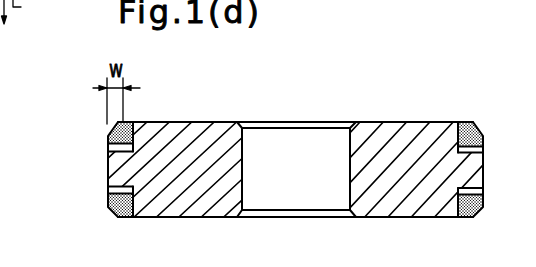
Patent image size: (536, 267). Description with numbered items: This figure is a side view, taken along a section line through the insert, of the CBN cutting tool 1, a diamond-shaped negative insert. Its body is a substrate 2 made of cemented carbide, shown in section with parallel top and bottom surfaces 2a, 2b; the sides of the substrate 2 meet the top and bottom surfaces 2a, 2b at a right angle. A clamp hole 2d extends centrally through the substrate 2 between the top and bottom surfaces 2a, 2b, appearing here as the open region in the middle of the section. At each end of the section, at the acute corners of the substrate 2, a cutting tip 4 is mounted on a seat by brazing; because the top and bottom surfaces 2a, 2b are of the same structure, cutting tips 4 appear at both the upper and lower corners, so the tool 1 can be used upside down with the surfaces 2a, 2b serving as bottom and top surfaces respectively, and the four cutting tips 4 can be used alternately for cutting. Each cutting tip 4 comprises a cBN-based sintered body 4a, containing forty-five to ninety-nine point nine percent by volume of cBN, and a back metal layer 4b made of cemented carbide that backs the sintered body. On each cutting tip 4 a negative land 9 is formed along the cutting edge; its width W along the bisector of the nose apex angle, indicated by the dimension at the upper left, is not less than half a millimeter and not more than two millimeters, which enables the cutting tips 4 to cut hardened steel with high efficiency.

The CBN cutting tool 1 is at (367, 112).
The substrate 2 is at (388, 207).
The top surface 2a is at (168, 122).
The bottom surface 2b is at (202, 217).
The clamp hole 2d is at (245, 147).
The cutting tip 4 is at (33, 173).
The cBN-based sintered body 4a is at (108, 208).
The back metal layer 4b is at (107, 188).
The negative land 9 is at (113, 131).